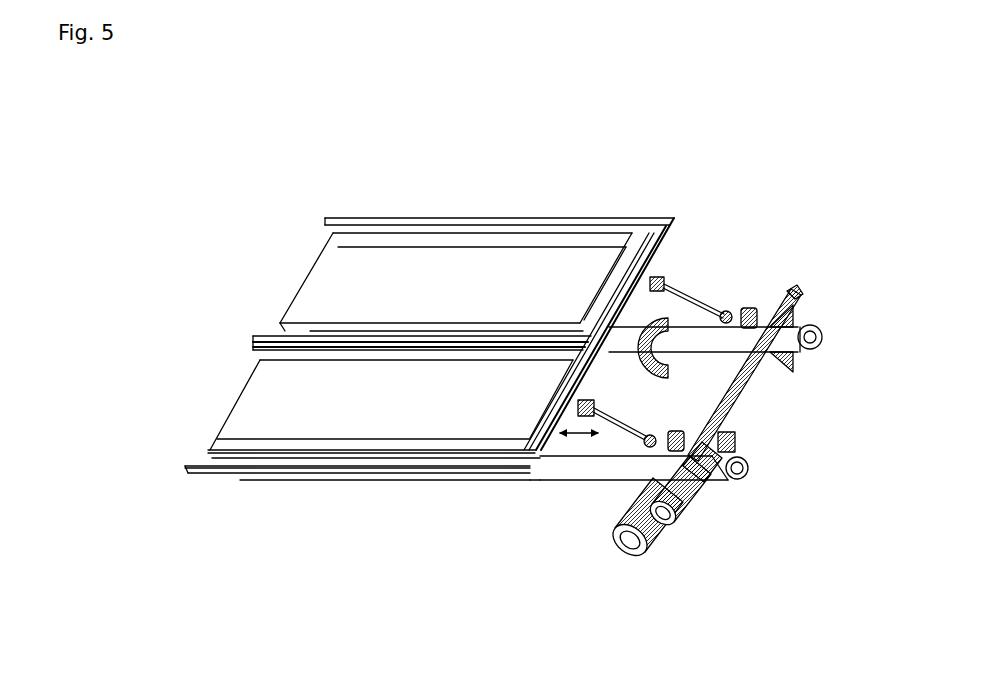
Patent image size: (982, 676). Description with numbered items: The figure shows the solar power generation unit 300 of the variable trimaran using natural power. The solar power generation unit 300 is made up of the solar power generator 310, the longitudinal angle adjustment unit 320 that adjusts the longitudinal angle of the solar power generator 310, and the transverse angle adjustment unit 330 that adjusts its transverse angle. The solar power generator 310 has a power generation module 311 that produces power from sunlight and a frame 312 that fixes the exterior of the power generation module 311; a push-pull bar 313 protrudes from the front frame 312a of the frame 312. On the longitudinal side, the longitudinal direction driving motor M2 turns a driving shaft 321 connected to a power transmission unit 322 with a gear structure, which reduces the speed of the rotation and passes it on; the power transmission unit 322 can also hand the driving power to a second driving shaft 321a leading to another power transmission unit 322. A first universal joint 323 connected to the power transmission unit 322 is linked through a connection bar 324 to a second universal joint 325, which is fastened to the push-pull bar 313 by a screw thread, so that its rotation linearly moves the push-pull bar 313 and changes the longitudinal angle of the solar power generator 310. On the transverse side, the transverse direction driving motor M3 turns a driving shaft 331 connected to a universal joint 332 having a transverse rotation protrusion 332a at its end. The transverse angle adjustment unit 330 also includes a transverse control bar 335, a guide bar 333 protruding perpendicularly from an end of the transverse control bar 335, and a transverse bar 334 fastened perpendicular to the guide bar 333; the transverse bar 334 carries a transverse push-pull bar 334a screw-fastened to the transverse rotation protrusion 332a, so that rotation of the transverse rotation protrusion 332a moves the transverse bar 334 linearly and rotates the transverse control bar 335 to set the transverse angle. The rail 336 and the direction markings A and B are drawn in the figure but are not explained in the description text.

The solar power generation unit 300 is at (298, 111).
The solar power generator 310 is at (459, 251).
The power generation module 311 is at (300, 272).
The frame 312 is at (256, 335).
The front frame 312a is at (537, 488).
The push-pull bar 313 is at (630, 235).
The longitudinal angle adjustment unit 320 is at (656, 315).
The driving shaft 321 is at (647, 478).
The second driving shaft 321a is at (778, 353).
The power transmission unit 322 is at (755, 307).
The first universal joint 323 is at (728, 310).
The connection bar 324 is at (700, 292).
The second universal joint 325 is at (659, 276).
The transverse angle adjustment unit 330 is at (738, 422).
The driving shaft 331 is at (687, 539).
The universal joint 332 is at (722, 490).
The transverse rotation protrusion 332a is at (732, 475).
The guide bar 333 is at (734, 440).
The transverse bar 334 is at (794, 291).
The transverse push-pull bar 334a is at (750, 463).
The transverse control bar 335 is at (580, 485).
The lower rail 336 is at (408, 482).
The longitudinal direction driving motor M2 is at (633, 562).
The transverse direction driving motor M3 is at (678, 534).
The direction A is at (762, 378).
The rotation direction B is at (812, 322).